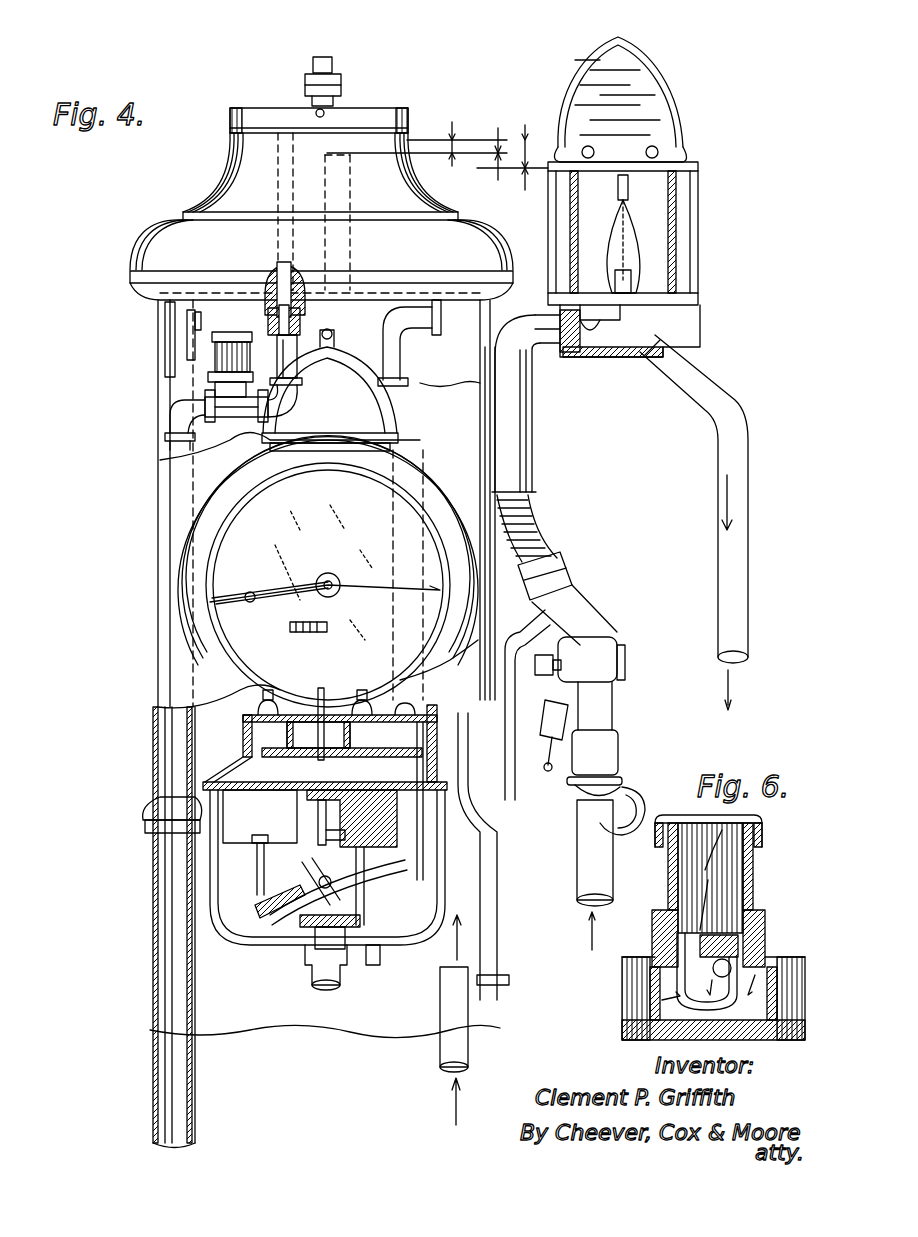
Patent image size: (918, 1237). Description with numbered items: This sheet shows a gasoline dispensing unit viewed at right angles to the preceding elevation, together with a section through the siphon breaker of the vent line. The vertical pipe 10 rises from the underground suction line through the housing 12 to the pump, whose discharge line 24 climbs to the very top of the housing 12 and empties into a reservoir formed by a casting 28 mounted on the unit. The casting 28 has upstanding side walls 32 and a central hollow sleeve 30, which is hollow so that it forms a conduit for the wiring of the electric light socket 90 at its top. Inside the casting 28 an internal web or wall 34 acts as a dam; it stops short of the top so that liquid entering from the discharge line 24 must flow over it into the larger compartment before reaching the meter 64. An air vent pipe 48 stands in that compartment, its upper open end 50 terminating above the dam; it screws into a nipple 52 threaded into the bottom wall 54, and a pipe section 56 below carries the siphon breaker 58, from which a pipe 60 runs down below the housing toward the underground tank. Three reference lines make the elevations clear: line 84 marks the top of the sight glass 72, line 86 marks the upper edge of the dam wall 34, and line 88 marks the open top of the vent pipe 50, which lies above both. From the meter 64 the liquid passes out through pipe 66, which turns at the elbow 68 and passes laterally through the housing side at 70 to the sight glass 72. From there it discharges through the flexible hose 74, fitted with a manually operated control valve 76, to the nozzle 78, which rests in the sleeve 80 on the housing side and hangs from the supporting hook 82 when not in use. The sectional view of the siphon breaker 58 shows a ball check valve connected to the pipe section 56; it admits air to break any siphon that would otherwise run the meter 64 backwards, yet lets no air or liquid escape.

In FIG. 4, the vertical pipe 10 is at (326, 504).
In FIG. 4, the housing 12 is at (328, 571).
In FIG. 4, the discharge line 24 is at (450, 996).
In FIG. 4, the casting 28 is at (478, 245).
In FIG. 4, the central hollow sleeve 30 is at (300, 233).
In FIG. 4, the upstanding side walls 32 is at (212, 192).
In FIG. 4, the internal web or wall 34 is at (388, 186).
In FIG. 4, the air vent pipe 48 is at (272, 300).
In FIG. 4, the upper open end 50 is at (236, 148).
In FIG. 4, the nipple 52 is at (268, 322).
In FIG. 4, the bottom wall 54 is at (165, 320).
In FIG. 4, the pipe section 56 is at (290, 356).
In FIG. 6, the pipe section 56 is at (800, 957).
In FIG. 4, the siphon breaker 58 is at (214, 372).
In FIG. 6, the siphon breaker 58 is at (752, 888).
In FIG. 4, the pipe 60 is at (178, 470).
In FIG. 4, the meter 64 is at (240, 880).
In FIG. 4, the pipe 66 is at (420, 435).
In FIG. 4, the elbow 68 is at (383, 328).
In FIG. 4, the lateral connection 70 is at (518, 320).
In FIG. 4, the sight glass 72 is at (680, 248).
In FIG. 4, the flexible hose 74 is at (720, 393).
In FIG. 4, the control valve 76 is at (600, 648).
In FIG. 4, the nozzle 78 is at (540, 533).
In FIG. 4, the sleeve 80 is at (535, 395).
In FIG. 4, the supporting hook 82 is at (635, 790).
In FIG. 4, the line 84 is at (530, 145).
In FIG. 4, the line 86 is at (493, 138).
In FIG. 4, the line 88 is at (455, 133).
In FIG. 4, the electric light socket 90 is at (343, 82).